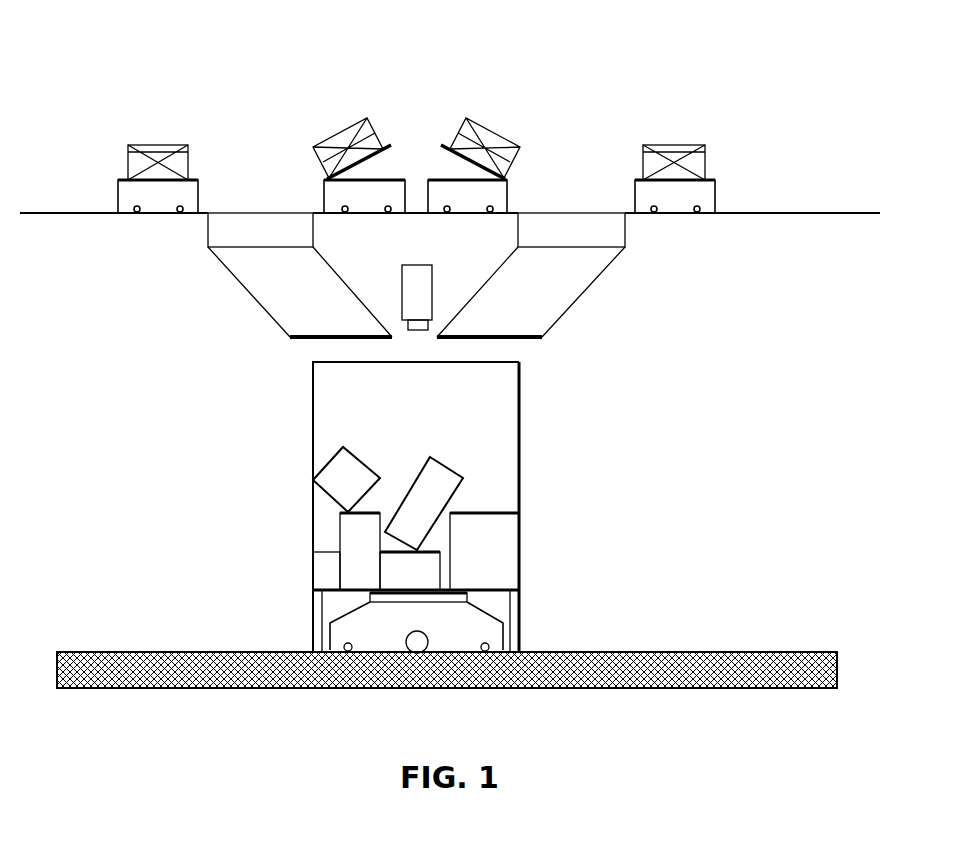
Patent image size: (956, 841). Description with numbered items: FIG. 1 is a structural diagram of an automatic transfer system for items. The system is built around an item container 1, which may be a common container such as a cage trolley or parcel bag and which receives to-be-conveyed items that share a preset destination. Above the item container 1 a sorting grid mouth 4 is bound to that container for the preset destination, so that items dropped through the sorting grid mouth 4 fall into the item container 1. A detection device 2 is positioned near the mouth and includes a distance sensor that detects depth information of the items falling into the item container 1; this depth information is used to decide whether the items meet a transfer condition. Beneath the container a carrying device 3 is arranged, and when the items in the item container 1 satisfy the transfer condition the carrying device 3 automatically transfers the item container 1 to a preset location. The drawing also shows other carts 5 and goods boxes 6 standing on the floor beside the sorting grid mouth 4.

The item container 1 is at (519, 457).
The detection device 2 is at (432, 290).
The carrying device 3 is at (480, 625).
The sorting grid mouth 4 is at (560, 207).
The cart 5 is at (391, 182).
The goods box 6 is at (363, 120).